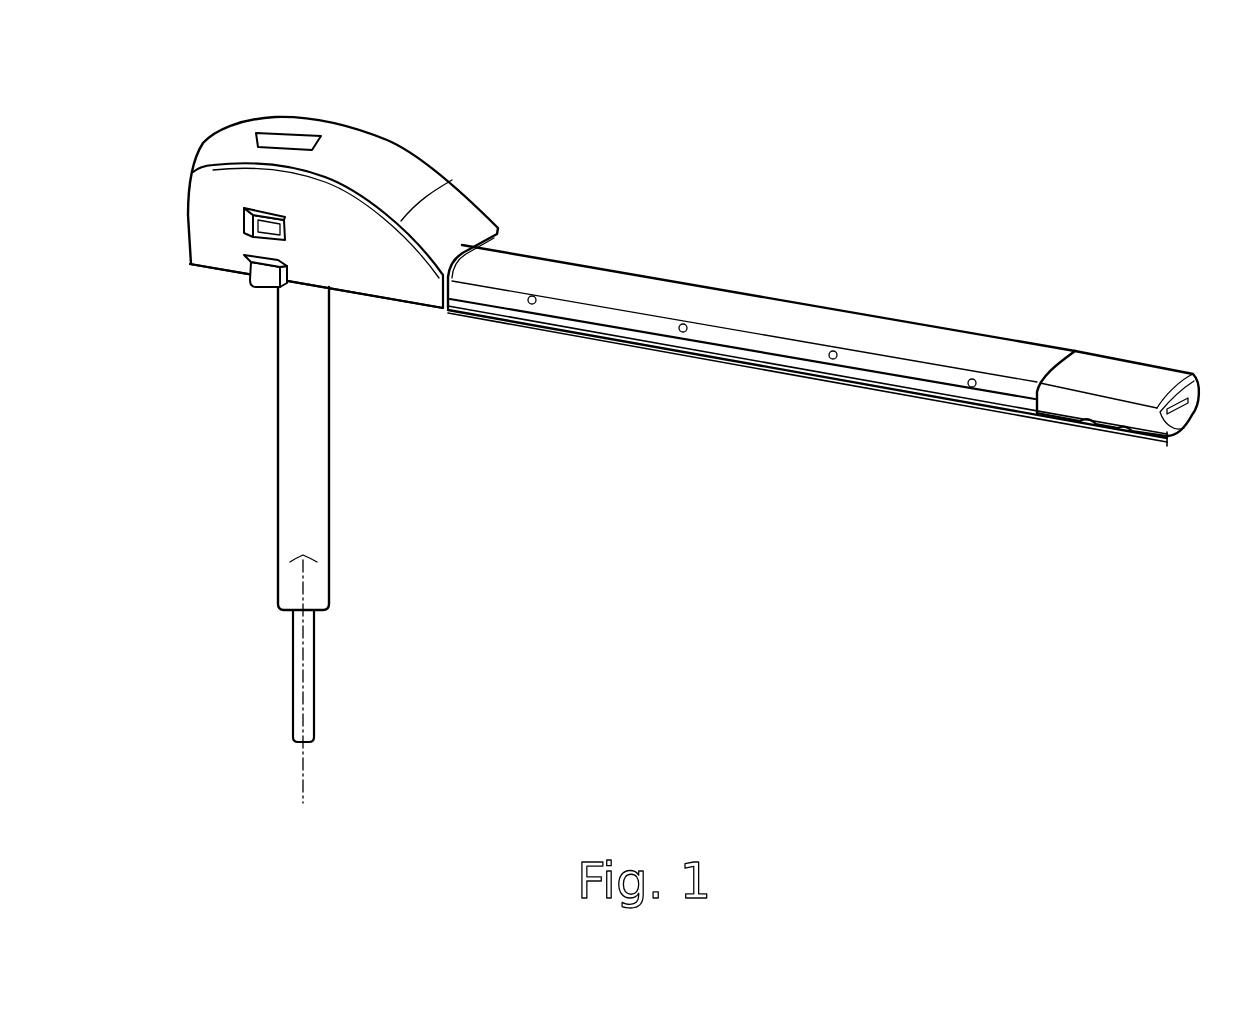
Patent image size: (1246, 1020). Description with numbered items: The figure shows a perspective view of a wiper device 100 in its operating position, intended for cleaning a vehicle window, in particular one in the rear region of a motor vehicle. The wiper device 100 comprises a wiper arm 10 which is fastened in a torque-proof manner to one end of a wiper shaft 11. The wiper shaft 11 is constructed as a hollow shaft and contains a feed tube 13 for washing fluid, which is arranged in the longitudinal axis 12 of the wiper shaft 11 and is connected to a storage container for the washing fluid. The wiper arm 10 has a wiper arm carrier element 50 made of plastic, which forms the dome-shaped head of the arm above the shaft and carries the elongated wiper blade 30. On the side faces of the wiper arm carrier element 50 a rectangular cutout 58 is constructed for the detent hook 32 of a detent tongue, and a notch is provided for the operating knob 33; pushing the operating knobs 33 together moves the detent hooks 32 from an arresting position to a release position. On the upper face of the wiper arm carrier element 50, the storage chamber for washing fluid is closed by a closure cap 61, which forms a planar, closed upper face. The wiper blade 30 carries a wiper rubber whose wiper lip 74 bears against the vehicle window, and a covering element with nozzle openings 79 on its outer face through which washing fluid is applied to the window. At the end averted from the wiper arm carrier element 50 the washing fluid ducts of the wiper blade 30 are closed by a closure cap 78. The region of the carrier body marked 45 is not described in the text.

The wiper device 100 is at (659, 426).
The wiper arm 10 is at (826, 331).
The wiper shaft 11 is at (297, 545).
The longitudinal axis 12 is at (303, 787).
The feed tube 13 is at (315, 677).
The wiper blade 30 is at (826, 364).
The detent hook 32 is at (267, 224).
The operating knob 33 is at (270, 284).
The housing body 45 is at (363, 284).
The wiper arm carrier element 50 is at (306, 220).
The rectangular cutout 58 is at (200, 252).
The closure cap 61 is at (282, 135).
The wiper lip 74 is at (1003, 412).
The closure cap 78 is at (1133, 371).
The nozzle openings 79 is at (681, 333).